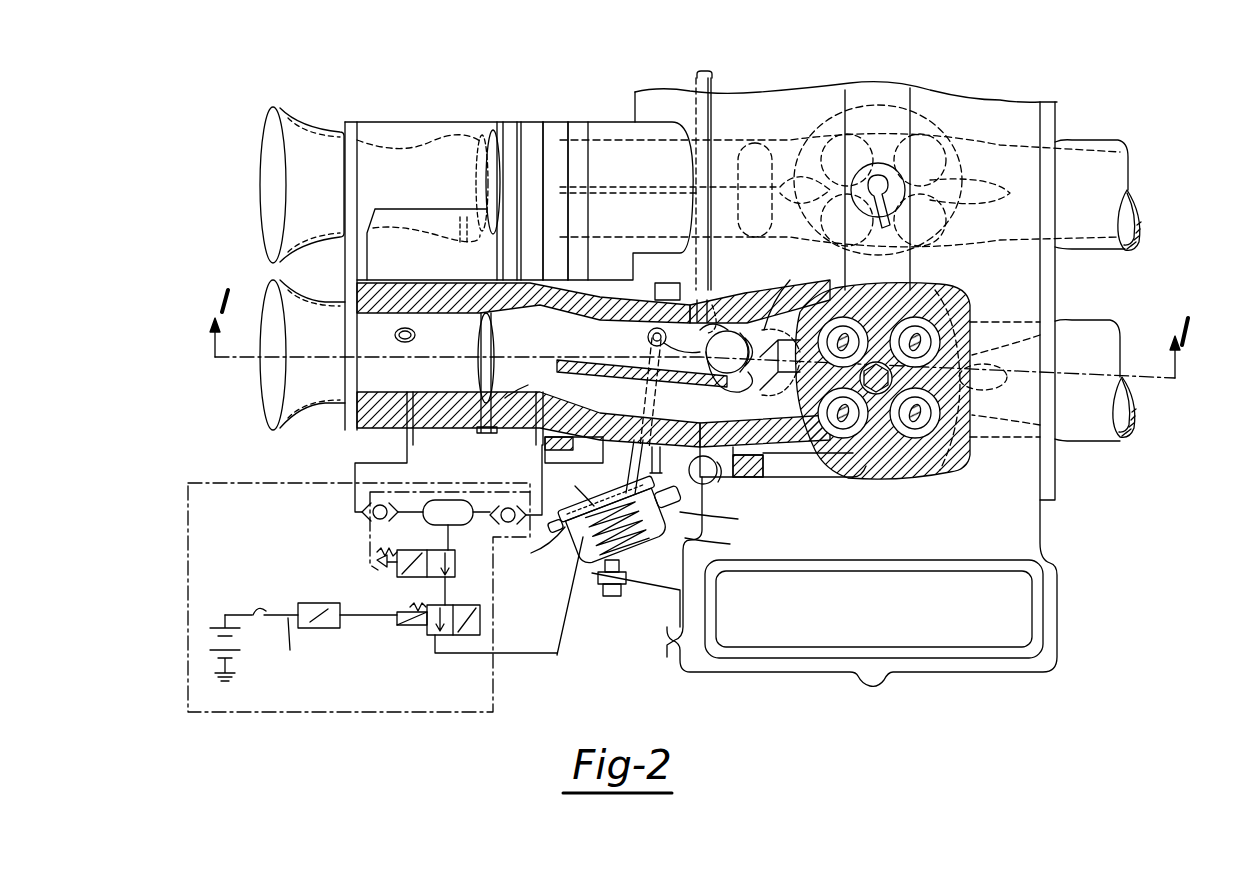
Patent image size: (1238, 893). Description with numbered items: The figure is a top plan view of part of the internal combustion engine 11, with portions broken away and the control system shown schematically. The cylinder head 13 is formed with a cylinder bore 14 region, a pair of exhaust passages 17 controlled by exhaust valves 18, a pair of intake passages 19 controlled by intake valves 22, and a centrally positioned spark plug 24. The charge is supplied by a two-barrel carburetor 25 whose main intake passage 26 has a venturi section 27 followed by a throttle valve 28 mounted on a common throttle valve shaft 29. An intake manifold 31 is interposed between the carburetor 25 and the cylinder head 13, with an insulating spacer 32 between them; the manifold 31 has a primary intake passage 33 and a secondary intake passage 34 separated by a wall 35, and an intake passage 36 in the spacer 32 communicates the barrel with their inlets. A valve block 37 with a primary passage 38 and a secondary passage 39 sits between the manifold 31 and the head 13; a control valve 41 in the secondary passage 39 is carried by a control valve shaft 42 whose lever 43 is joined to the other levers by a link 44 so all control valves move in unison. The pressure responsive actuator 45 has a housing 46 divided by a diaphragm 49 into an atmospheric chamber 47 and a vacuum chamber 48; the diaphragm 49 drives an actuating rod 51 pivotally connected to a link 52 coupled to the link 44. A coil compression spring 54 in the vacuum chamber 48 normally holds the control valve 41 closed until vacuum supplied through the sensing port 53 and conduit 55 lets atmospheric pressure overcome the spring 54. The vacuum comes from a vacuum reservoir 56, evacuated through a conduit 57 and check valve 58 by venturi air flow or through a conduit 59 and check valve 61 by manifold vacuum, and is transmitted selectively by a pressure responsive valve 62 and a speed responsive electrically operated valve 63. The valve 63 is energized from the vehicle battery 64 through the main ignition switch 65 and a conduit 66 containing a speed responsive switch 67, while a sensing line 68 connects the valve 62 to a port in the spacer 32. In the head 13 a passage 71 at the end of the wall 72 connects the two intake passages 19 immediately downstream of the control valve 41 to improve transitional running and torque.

The internal combustion engine 11 is at (1044, 519).
The cylinder head 13 is at (783, 462).
The cylinder bore 14 is at (968, 322).
The exhaust passage 17 is at (1135, 222).
The exhaust valve 18 is at (941, 346).
The intake passage 19 is at (845, 300).
The intake valve 22 is at (800, 353).
The spark plug 24 is at (930, 290).
The carburetor 25 is at (430, 117).
The main intake passage 26 is at (465, 232).
The venturi section 27 is at (325, 410).
The throttle valve 28 is at (478, 178).
The throttle valve shaft 29 is at (530, 379).
The intake manifold 31 is at (660, 466).
The insulating spacer 32 is at (556, 128).
The primary intake passage 33 is at (552, 460).
The secondary intake passage 34 is at (603, 290).
The wall 35 is at (650, 342).
The intake passage 36 is at (600, 362).
The valve block 37 is at (722, 480).
The primary passage 38 is at (706, 468).
The secondary passage 39 is at (716, 312).
The control valve 41 is at (733, 330).
The control valve shaft 42 is at (779, 236).
The lever 43 is at (690, 305).
The link 44 is at (712, 76).
The pressure responsive actuator 45 is at (650, 574).
The housing 46 is at (724, 515).
The atmospheric chamber 47 is at (570, 483).
The vacuum chamber 48 is at (533, 548).
The diaphragm 49 is at (722, 540).
The actuating rod 51 is at (625, 492).
The link 52 is at (655, 292).
The sensing port 53 is at (578, 562).
The coil compression spring 54 is at (588, 583).
The conduit 55 is at (559, 603).
The vacuum reservoir 56 is at (450, 500).
The conduit 57 is at (372, 462).
The check valve 58 is at (390, 551).
The conduit 59 is at (605, 430).
The check valve 61 is at (520, 490).
The pressure responsive valve 62 is at (414, 578).
The speed responsive electrically operated valve 63 is at (421, 625).
The vehicle battery 64 is at (200, 641).
The main ignition switch 65 is at (262, 611).
The conduit 66 is at (290, 646).
The speed responsive switch 67 is at (318, 604).
The sensing line 68 is at (365, 530).
The passage 71 is at (738, 378).
The wall 72 is at (822, 327).